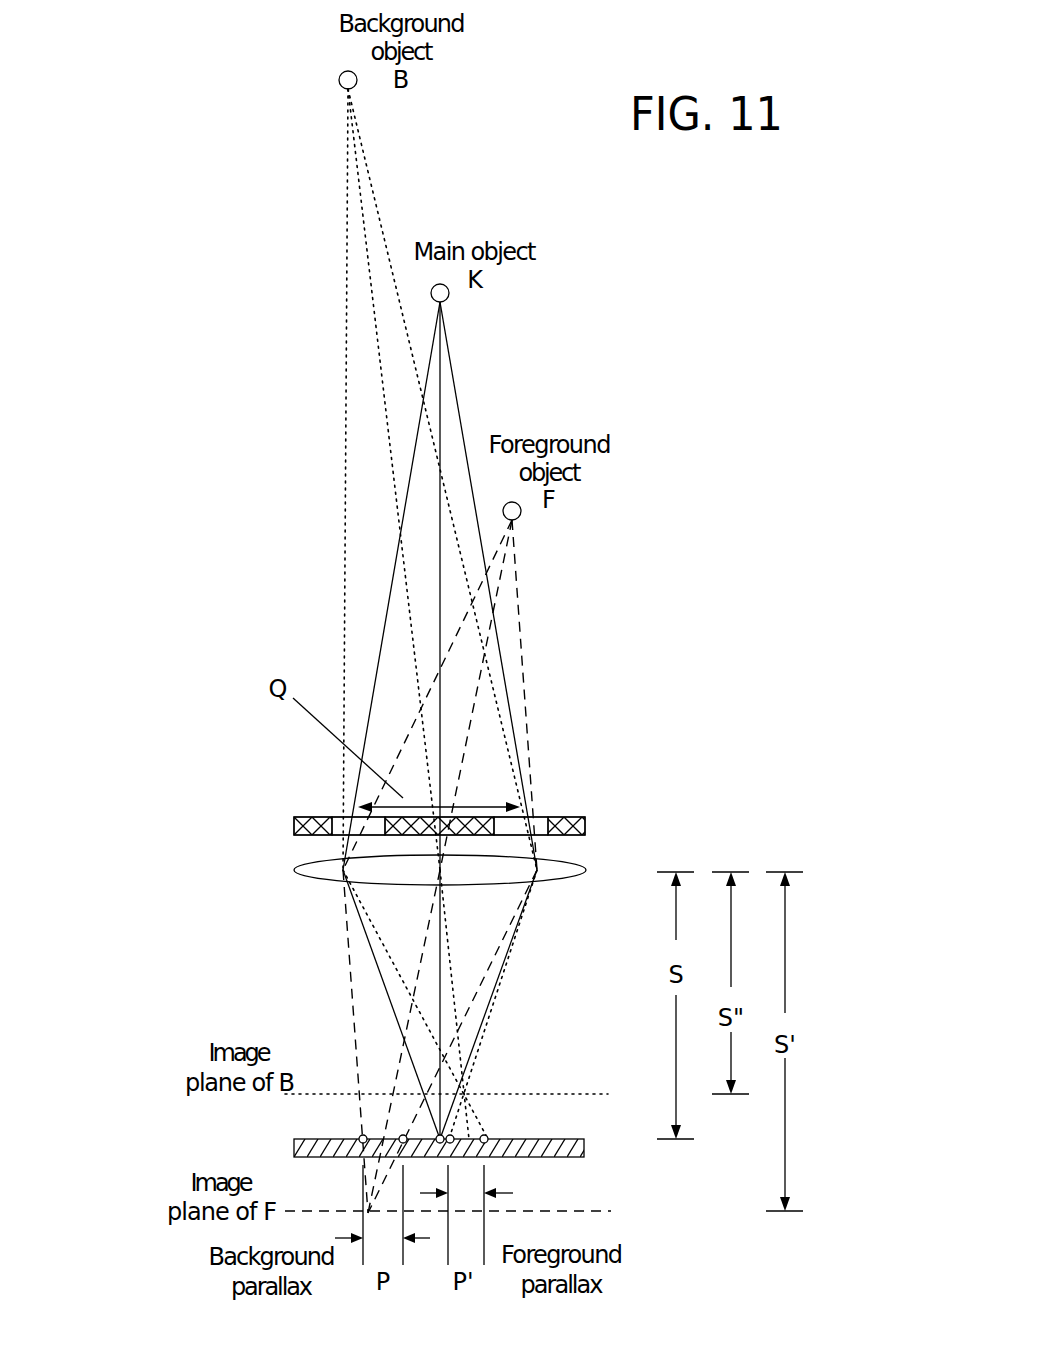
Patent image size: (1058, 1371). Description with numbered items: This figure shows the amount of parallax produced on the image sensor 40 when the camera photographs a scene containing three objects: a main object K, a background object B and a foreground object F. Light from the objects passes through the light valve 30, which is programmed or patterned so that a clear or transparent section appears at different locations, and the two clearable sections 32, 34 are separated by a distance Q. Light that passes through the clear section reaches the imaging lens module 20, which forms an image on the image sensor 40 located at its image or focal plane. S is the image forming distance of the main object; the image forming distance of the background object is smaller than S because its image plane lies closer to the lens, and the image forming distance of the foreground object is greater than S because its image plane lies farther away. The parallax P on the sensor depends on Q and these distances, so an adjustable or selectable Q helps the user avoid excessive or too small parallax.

The imaging lens module 20 is at (537, 878).
The light valve 30 is at (585, 826).
The clearable section 32 is at (540, 815).
The clearable section 34 is at (340, 815).
The image sensor 40 is at (584, 1150).